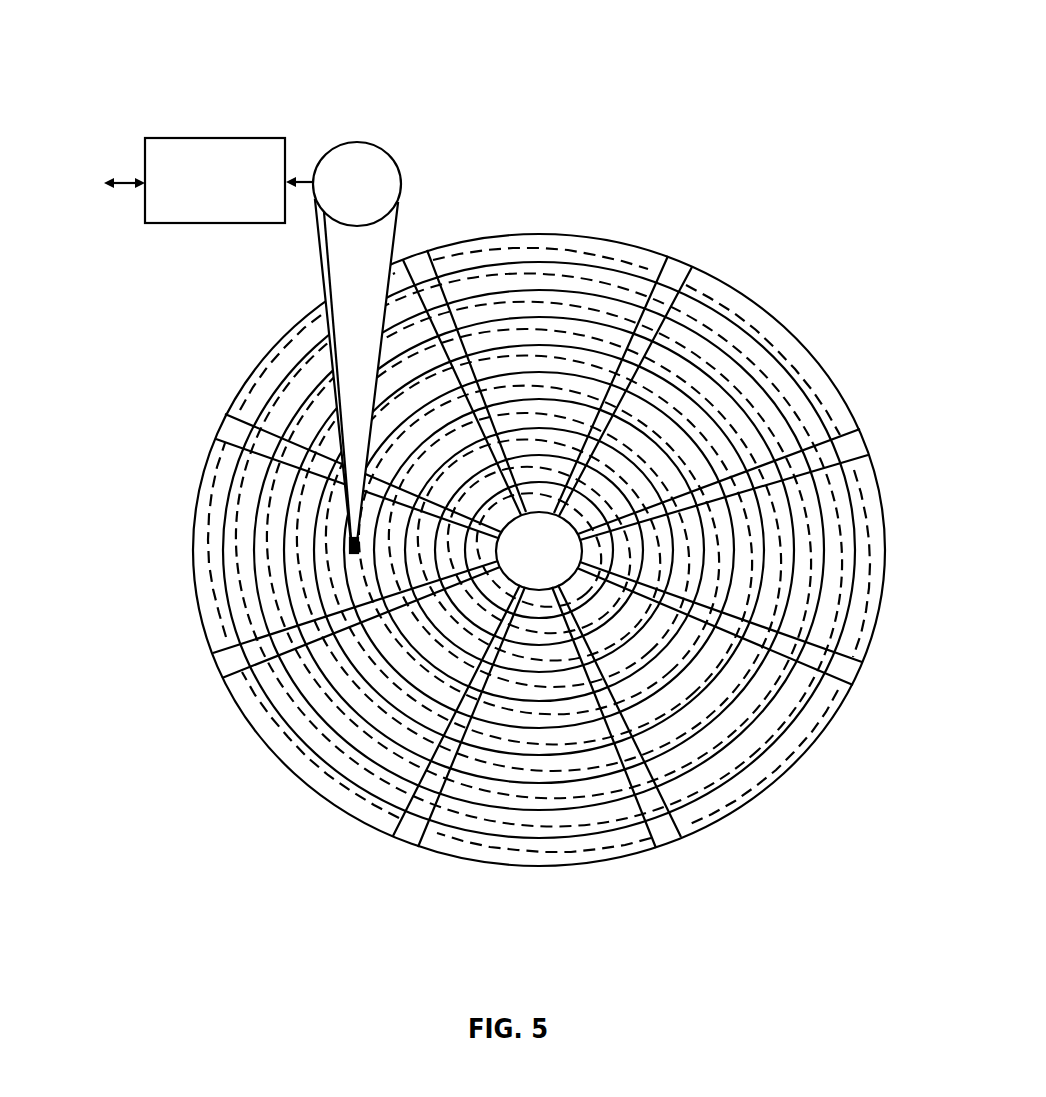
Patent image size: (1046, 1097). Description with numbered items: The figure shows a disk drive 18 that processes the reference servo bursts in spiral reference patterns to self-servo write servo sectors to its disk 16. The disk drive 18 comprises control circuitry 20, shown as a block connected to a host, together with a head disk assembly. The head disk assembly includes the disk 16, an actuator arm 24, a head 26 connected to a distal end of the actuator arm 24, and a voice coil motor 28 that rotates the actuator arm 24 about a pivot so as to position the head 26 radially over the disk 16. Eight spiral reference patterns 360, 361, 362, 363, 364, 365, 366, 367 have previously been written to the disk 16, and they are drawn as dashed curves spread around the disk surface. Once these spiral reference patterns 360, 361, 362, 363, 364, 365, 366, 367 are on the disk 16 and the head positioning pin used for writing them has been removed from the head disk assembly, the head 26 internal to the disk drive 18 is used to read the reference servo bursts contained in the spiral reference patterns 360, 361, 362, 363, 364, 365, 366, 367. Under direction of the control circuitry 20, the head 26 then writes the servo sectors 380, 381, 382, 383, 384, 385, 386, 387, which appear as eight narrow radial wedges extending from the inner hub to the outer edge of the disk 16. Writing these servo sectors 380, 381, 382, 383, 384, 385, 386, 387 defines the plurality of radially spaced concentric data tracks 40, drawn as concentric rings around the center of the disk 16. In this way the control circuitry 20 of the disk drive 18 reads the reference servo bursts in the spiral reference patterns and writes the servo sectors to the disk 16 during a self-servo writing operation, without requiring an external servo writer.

The disk 16 is at (733, 264).
The disk drive 18 is at (170, 48).
The control circuitry 20 is at (237, 137).
The actuator arm 24 is at (318, 262).
The head 26 is at (344, 560).
The voice coil motor 28 is at (360, 134).
The data tracks 40 is at (622, 258).
The spiral reference pattern 360 is at (560, 248).
The spiral reference pattern 361 is at (789, 351).
The spiral reference pattern 362 is at (869, 567).
The spiral reference pattern 363 is at (767, 771).
The spiral reference pattern 364 is at (532, 850).
The spiral reference pattern 365 is at (302, 755).
The spiral reference pattern 366 is at (210, 543).
The spiral reference pattern 367 is at (320, 330).
The servo sector 380 is at (678, 264).
The servo sector 381 is at (865, 435).
The servo sector 382 is at (850, 676).
The servo sector 383 is at (660, 840).
The servo sector 384 is at (407, 833).
The servo sector 385 is at (218, 660).
The servo sector 386 is at (228, 427).
The servo sector 387 is at (420, 258).